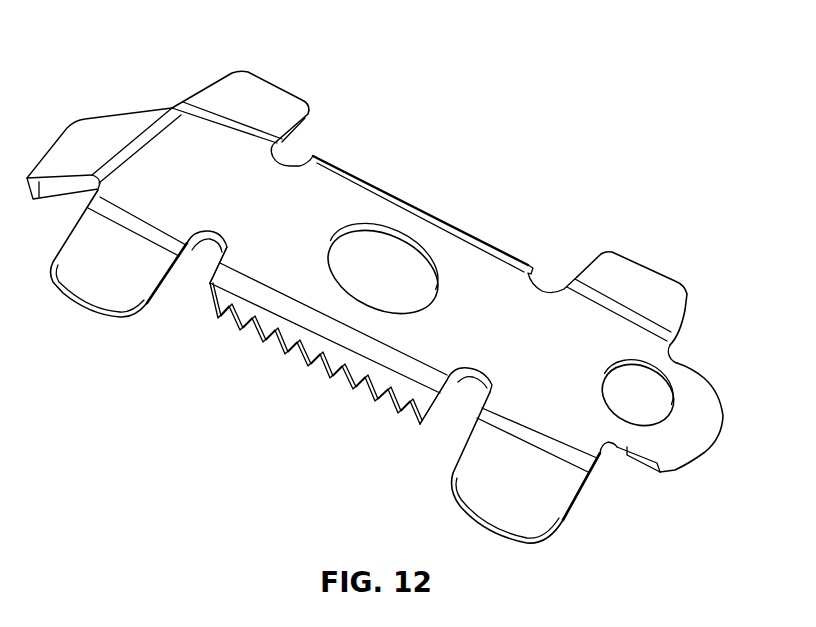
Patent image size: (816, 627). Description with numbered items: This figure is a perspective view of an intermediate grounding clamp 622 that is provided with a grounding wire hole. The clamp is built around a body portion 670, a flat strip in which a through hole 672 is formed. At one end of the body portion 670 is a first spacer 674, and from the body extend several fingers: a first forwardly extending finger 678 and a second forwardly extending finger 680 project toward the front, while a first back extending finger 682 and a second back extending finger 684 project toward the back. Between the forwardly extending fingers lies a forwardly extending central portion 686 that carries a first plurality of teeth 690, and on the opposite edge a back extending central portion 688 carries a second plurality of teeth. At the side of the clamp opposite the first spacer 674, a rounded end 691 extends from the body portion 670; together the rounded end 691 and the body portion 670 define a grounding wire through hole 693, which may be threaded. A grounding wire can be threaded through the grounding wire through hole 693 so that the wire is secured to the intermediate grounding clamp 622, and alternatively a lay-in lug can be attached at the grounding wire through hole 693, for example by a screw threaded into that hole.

The intermediate grounding clamp 622 is at (660, 66).
The body portion 670 is at (488, 277).
The through hole 672 is at (388, 222).
The first spacer 674 is at (68, 153).
The first forwardly extending finger 678 is at (107, 293).
The second forwardly extending finger 680 is at (555, 500).
The first back extending finger 682 is at (272, 97).
The second back extending finger 684 is at (640, 287).
The forwardly extending central portion 686 is at (302, 310).
The back extending central portion 688 is at (455, 227).
The first plurality of teeth 690 is at (337, 373).
The rounded end 691 is at (712, 448).
The grounding wire through hole 693 is at (667, 350).